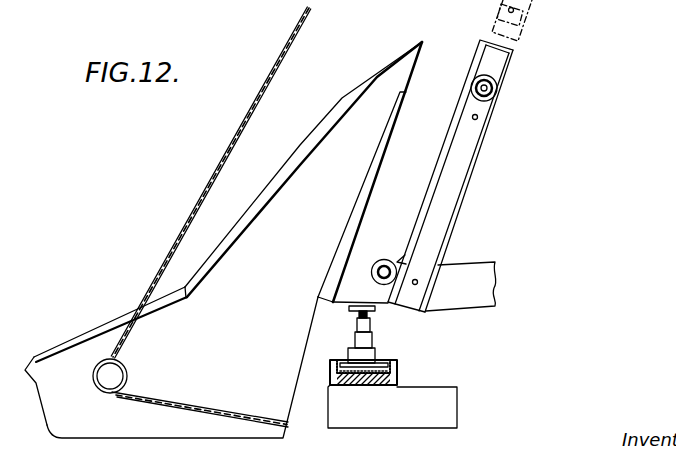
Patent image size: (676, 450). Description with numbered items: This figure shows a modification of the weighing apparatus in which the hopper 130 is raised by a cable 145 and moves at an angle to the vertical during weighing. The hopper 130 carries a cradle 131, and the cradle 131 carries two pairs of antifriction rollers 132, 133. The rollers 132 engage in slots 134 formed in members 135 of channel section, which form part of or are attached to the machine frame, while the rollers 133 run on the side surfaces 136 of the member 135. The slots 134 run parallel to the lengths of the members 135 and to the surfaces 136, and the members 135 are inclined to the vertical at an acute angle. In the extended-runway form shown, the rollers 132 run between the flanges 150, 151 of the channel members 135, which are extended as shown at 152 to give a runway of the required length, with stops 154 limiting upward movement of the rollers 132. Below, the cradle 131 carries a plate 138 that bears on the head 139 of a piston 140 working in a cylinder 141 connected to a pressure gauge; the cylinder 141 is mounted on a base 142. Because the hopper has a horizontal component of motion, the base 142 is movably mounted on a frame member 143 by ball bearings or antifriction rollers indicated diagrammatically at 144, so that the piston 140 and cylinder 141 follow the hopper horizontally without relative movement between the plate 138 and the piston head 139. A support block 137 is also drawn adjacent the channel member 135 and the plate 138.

The hopper 130 is at (263, 388).
The cradle 131 is at (437, 193).
The antifriction rollers 132 is at (503, 83).
The antifriction rollers 133 is at (389, 259).
The slots 134 is at (502, 98).
The members of channel section 135 is at (406, 92).
The side surfaces 136 is at (398, 258).
The support block 137 is at (443, 287).
The plate 138 is at (378, 307).
The piston head 139 is at (369, 312).
The piston 140 is at (371, 323).
The cylinder 141 is at (367, 338).
The base 142 is at (362, 354).
The frame member 143 is at (419, 406).
The ball bearings or antifriction rollers 144 is at (398, 378).
The cable 145 is at (243, 137).
The flange 150 is at (478, 60).
The flange 151 is at (486, 148).
The extension of channel members 152 is at (528, 34).
The stops 154 is at (522, 12).